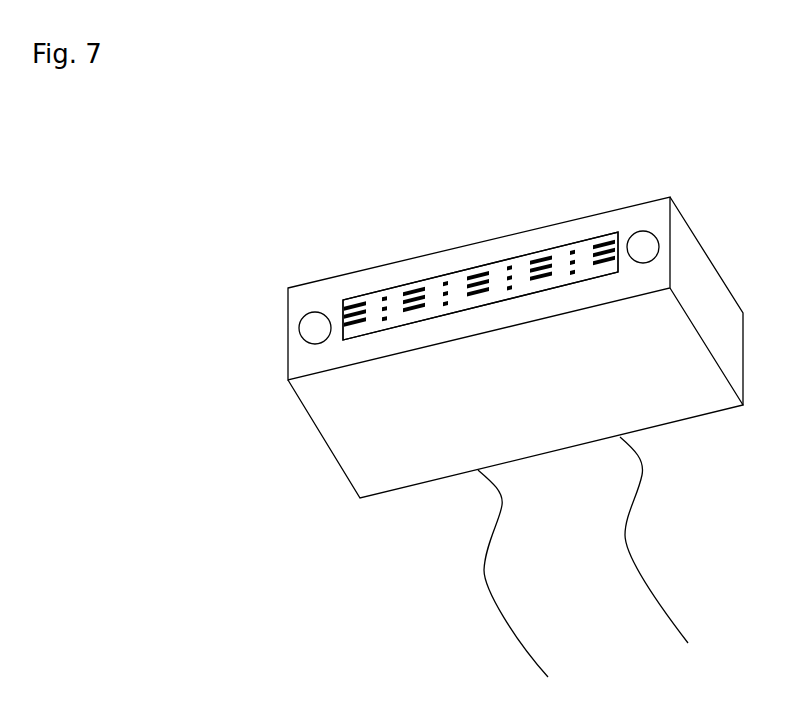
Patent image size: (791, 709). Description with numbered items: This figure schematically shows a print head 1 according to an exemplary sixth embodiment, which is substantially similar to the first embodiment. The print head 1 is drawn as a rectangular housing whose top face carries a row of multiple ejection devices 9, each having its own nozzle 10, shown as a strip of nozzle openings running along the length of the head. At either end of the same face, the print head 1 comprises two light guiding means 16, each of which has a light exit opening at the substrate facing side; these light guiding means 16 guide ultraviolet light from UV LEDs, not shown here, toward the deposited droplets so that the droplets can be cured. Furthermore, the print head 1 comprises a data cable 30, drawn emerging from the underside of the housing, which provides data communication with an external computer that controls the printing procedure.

The print head 1 is at (355, 440).
The ejection device 9 is at (468, 273).
The nozzle 10 is at (480, 286).
The light guiding means 16 is at (312, 326).
The data cable 30 is at (615, 508).